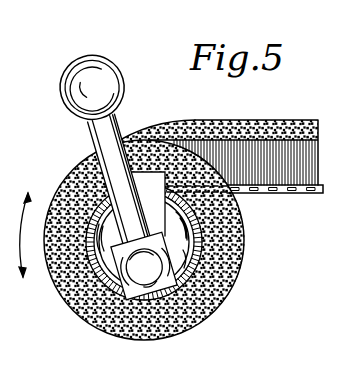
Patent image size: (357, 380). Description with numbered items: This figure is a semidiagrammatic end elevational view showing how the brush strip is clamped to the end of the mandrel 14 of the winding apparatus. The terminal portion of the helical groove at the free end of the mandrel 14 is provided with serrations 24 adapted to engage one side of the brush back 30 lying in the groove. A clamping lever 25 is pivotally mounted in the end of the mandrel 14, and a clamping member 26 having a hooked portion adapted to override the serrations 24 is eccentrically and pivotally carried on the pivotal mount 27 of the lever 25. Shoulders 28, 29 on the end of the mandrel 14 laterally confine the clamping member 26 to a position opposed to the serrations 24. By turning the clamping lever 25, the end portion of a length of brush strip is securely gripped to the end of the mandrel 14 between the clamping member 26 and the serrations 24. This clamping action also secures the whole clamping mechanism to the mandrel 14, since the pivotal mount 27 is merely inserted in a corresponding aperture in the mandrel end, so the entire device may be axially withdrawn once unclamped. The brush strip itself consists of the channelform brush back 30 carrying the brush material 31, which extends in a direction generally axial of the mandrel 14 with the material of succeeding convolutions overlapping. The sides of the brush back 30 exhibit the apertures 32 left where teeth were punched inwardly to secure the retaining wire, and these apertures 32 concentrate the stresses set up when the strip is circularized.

The mandrel 14 is at (180, 255).
The serrations 24 is at (101, 175).
The clamping lever 25 is at (112, 82).
The clamping member 26 is at (144, 172).
The pivotal mount 27 is at (152, 308).
The shoulder 28 is at (97, 247).
The shoulder 29 is at (190, 240).
The brush back 30 is at (318, 194).
The brush material 31 is at (270, 126).
The apertures 32 is at (274, 194).